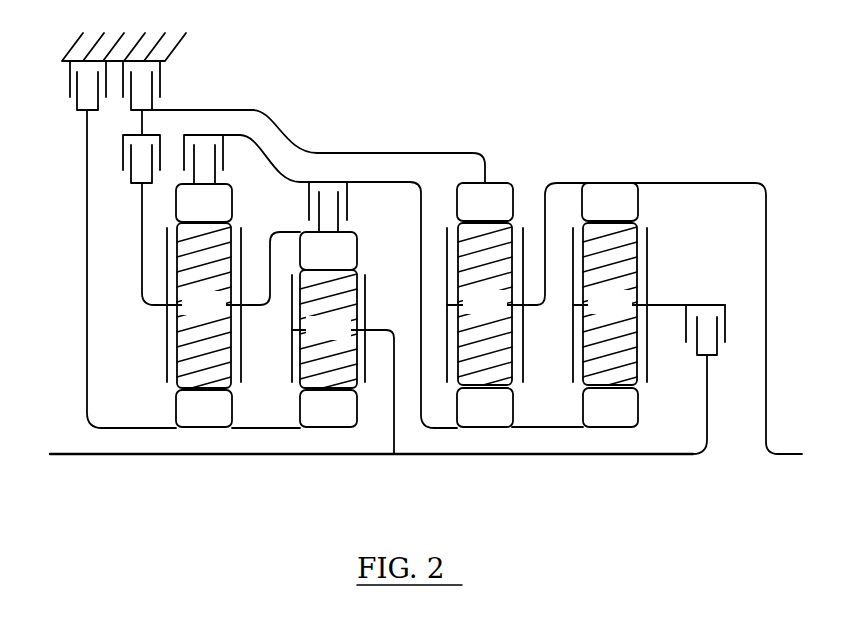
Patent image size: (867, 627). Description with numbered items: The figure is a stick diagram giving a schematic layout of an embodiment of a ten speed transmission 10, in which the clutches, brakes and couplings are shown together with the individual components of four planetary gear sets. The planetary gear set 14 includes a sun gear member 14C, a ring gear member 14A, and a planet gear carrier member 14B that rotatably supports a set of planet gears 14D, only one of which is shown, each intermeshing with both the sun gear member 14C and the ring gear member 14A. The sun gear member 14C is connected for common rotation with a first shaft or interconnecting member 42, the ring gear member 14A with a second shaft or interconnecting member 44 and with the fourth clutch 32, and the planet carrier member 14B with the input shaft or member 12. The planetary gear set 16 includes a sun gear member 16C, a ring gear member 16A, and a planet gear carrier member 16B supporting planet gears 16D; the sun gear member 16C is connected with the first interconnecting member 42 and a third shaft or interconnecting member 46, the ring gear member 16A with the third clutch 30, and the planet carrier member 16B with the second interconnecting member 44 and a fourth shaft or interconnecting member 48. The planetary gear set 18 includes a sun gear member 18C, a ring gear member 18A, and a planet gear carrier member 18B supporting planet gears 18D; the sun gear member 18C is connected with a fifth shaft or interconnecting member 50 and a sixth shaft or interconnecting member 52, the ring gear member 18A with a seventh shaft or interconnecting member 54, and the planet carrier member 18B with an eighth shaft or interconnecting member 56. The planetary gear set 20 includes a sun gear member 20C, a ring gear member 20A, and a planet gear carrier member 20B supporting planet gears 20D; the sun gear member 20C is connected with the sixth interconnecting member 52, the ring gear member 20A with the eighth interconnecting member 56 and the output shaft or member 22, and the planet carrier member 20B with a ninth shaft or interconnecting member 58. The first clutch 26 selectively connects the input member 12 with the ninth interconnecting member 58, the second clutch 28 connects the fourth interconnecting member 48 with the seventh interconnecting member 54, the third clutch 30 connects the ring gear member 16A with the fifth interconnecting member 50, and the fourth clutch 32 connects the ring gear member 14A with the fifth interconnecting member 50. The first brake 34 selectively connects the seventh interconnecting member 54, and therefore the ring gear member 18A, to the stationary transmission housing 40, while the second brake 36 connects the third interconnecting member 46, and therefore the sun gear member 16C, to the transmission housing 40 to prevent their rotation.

The ten speed transmission 10 is at (642, 135).
The input shaft or member 12 is at (72, 452).
The planetary gear set 14 is at (355, 376).
The ring gear member 14A is at (312, 263).
The planet gear carrier member 14B is at (367, 290).
The sun gear member 14C is at (312, 420).
The planet gears 14D is at (312, 339).
The planetary gear set 16 is at (173, 351).
The ring gear member 16A is at (188, 215).
The planet gear carrier member 16B is at (167, 333).
The sun gear member 16C is at (188, 420).
The planet gears 16D is at (188, 314).
The planetary gear set 18 is at (509, 351).
The ring gear member 18A is at (469, 214).
The planet gear carrier member 18B is at (523, 352).
The sun gear member 18C is at (469, 419).
The planet gears 18D is at (469, 313).
The planetary gear set 20 is at (643, 351).
The ring gear member 20A is at (594, 214).
The planet gear carrier member 20B is at (647, 240).
The sun gear member 20C is at (594, 419).
The planet gears 20D is at (594, 313).
The output shaft or member 22 is at (795, 453).
The first clutch 26 is at (725, 325).
The second clutch 28 is at (123, 155).
The third clutch 30 is at (223, 155).
The fourth clutch 32 is at (347, 198).
The first brake 34 is at (160, 80).
The second brake 36 is at (69, 80).
The transmission housing 40 is at (165, 61).
The first shaft or interconnecting member 42 is at (253, 430).
The second shaft or interconnecting member 44 is at (273, 275).
The third shaft or interconnecting member 46 is at (87, 278).
The fourth shaft or interconnecting member 48 is at (140, 247).
The fifth shaft or interconnecting member 50 is at (392, 180).
The sixth shaft or interconnecting member 52 is at (548, 428).
The seventh shaft or interconnecting member 54 is at (340, 152).
The eighth shaft or interconnecting member 56 is at (545, 212).
The ninth shaft or interconnecting member 58 is at (678, 305).